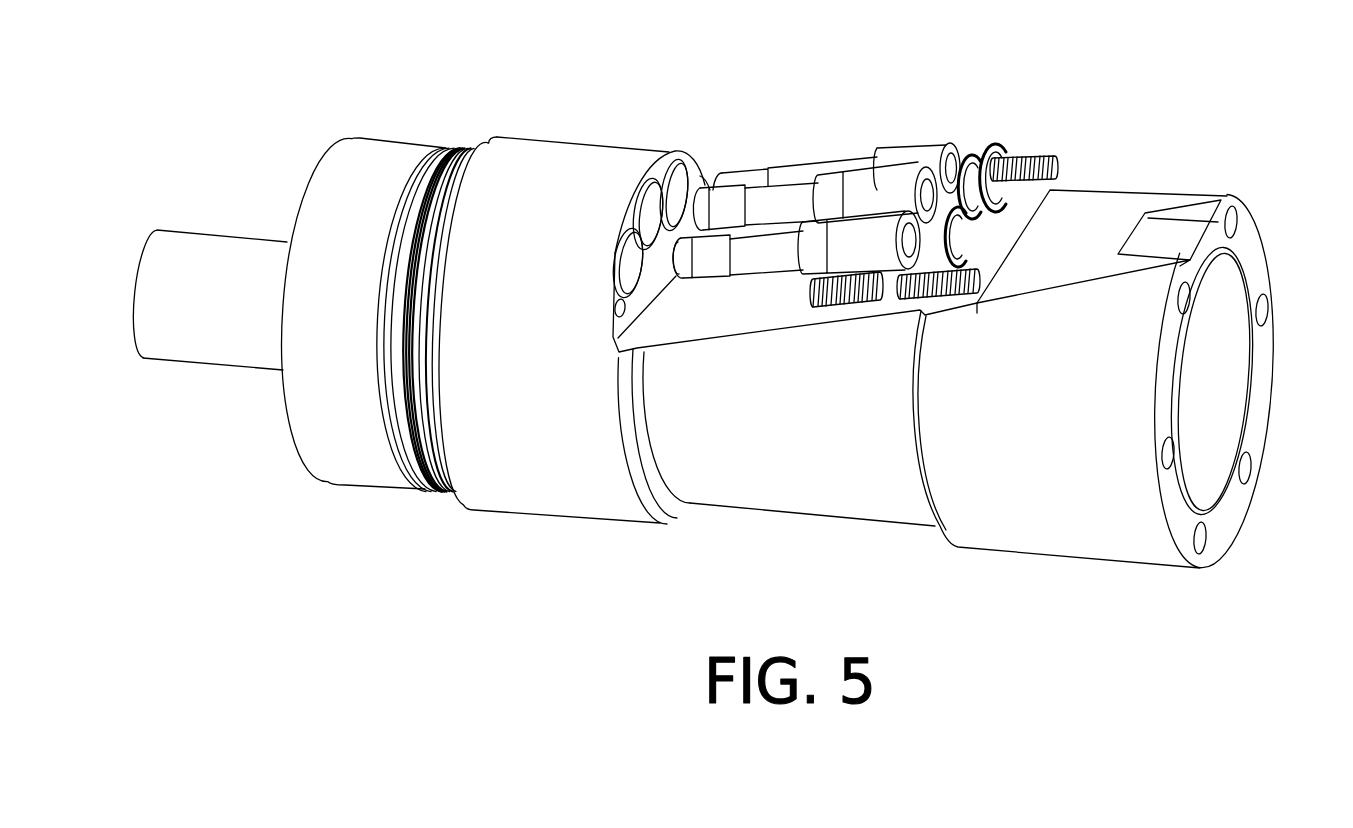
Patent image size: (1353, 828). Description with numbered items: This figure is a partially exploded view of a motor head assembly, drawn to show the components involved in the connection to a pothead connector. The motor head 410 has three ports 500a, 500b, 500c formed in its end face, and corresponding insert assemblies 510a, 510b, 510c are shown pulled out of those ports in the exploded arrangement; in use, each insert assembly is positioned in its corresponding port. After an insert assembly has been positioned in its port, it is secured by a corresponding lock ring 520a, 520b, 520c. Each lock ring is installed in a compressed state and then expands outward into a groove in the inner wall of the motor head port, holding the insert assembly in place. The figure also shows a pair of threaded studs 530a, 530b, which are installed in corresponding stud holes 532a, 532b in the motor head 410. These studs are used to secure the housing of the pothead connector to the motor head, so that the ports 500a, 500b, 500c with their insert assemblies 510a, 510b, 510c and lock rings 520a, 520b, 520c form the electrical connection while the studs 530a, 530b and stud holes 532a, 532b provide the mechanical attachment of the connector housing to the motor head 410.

The motor head 410 is at (646, 90).
The port 500a is at (614, 255).
The port 500b is at (635, 197).
The port 500c is at (662, 180).
The insert assembly 510a is at (913, 205).
The insert assembly 510b is at (906, 168).
The insert assembly 510c is at (895, 156).
The lock ring 520a is at (974, 252).
The lock ring 520b is at (992, 172).
The lock ring 520c is at (1010, 148).
The threaded stud 530a is at (887, 308).
The threaded stud 530b is at (1054, 162).
The stud hole 532a is at (614, 322).
The stud hole 532b is at (706, 183).